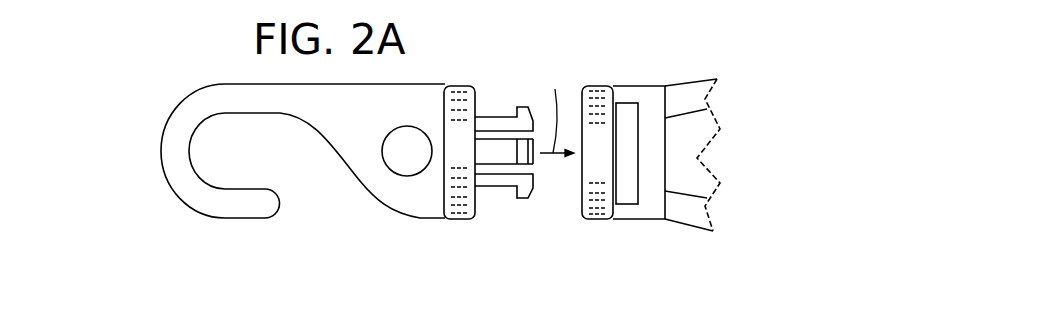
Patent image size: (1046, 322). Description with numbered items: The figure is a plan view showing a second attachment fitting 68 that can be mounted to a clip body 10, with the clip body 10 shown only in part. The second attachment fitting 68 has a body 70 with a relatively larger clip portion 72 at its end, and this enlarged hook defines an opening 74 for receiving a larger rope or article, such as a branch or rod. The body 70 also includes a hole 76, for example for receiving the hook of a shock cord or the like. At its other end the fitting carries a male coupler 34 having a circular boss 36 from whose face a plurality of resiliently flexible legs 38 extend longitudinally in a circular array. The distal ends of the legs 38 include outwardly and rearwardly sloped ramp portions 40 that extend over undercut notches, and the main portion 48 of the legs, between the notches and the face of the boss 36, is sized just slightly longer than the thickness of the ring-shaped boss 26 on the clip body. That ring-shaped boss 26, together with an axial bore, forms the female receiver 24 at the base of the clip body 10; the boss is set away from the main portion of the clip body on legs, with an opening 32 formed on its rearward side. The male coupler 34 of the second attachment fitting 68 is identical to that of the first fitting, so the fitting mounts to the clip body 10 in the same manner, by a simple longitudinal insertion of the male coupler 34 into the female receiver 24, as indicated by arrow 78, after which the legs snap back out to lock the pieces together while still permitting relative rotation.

The clip body 10 is at (663, 67).
The female receiver 24 is at (593, 84).
The ring-shaped boss 26 is at (592, 219).
The opening 32 is at (622, 169).
The male coupler 34 is at (463, 85).
The circular boss 36 is at (470, 219).
The resiliently flexible legs 38 is at (492, 147).
The ramp portions 40 is at (528, 190).
The main portion of the legs 48 is at (502, 113).
The second attachment fitting 68 is at (162, 96).
The body 70 is at (364, 114).
The clip portion 72 is at (168, 187).
The opening 74 is at (192, 163).
The hole 76 is at (423, 160).
The arrow 78 is at (557, 113).